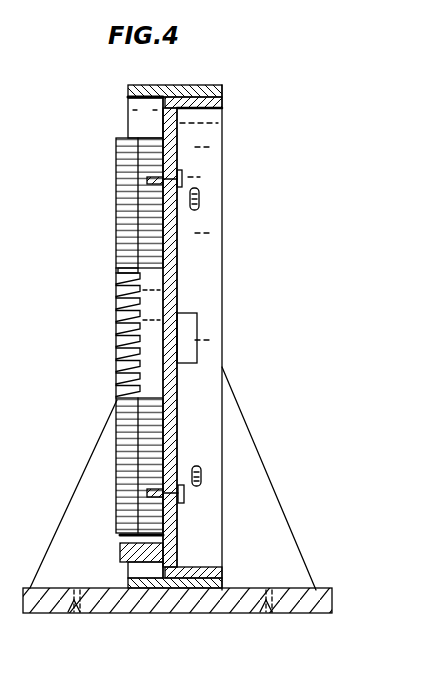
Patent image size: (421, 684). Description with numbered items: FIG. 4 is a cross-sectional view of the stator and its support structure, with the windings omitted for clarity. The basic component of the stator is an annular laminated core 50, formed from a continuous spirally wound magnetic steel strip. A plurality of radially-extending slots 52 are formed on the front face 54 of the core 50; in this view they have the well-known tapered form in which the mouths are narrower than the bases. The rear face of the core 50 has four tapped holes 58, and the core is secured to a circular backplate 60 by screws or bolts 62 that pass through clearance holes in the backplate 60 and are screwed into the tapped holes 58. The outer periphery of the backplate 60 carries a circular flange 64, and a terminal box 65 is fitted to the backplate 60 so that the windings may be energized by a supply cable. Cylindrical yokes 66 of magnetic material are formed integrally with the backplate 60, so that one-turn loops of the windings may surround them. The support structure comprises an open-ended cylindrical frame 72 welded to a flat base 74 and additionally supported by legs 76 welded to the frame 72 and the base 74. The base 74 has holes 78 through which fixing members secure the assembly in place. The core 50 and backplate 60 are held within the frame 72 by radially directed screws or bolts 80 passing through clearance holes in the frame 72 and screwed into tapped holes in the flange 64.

The annular laminated core 50 is at (148, 220).
The radially-extending slots 52 is at (120, 160).
The front face 54 is at (118, 248).
The tapped holes 58 is at (155, 180).
The circular backplate 60 is at (172, 256).
The screws or bolts 62 is at (183, 178).
The circular flange 64 is at (188, 100).
The terminal box 65 is at (187, 337).
The cylindrical yokes 66 is at (120, 552).
The open-ended cylindrical frame 72 is at (145, 90).
The flat base 74 is at (163, 598).
The legs 76 is at (100, 537).
The holes 78 is at (65, 612).
The radially directed screws or bolts 80 is at (200, 199).